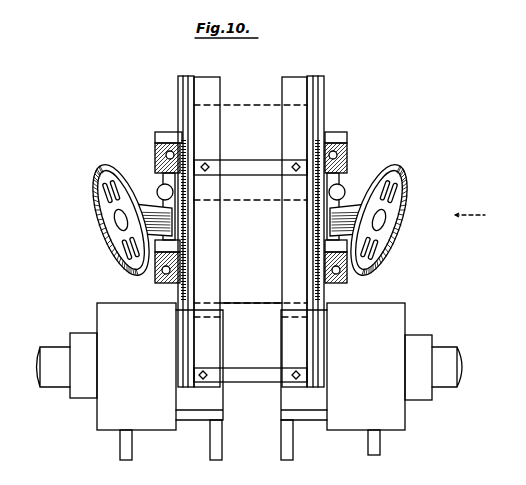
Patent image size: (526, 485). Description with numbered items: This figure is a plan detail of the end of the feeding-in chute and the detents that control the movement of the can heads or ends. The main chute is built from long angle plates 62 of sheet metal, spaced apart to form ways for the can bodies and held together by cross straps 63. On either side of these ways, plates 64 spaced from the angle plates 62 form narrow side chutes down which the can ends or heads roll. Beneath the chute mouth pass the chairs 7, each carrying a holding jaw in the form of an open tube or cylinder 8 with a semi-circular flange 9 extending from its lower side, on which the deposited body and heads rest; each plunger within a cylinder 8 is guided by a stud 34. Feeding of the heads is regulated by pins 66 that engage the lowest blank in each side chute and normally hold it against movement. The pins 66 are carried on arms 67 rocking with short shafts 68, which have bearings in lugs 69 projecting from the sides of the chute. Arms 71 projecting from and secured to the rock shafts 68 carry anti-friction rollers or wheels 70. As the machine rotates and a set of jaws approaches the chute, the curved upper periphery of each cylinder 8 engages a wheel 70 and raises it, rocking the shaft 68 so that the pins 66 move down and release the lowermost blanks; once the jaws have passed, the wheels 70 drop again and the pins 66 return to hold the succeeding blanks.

The chair 7 is at (122, 442).
The tube or cylinder 8 is at (251, 366).
The semi-circular flange 9 is at (205, 420).
The stud 34 is at (62, 370).
The angle plate 62 is at (308, 86).
The cross strap 63 is at (243, 368).
The plate 64 is at (180, 78).
The pin 66 is at (318, 212).
The arm 67 is at (160, 185).
The short shaft 68 is at (170, 232).
The lug 69 is at (172, 137).
The anti-friction roller or wheel 70 is at (101, 181).
The arm 71 is at (135, 216).